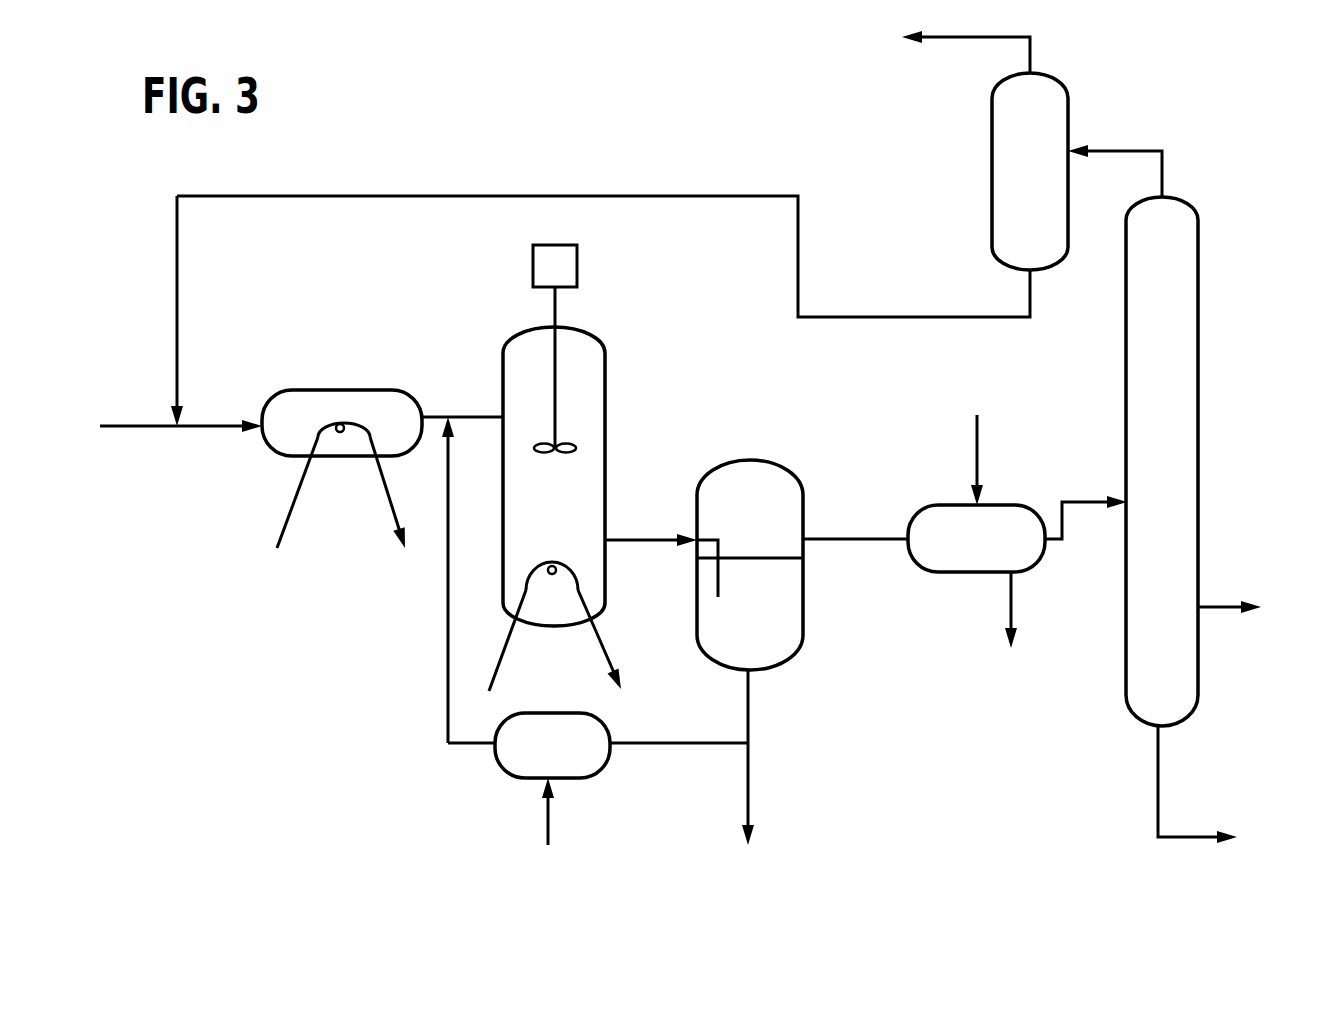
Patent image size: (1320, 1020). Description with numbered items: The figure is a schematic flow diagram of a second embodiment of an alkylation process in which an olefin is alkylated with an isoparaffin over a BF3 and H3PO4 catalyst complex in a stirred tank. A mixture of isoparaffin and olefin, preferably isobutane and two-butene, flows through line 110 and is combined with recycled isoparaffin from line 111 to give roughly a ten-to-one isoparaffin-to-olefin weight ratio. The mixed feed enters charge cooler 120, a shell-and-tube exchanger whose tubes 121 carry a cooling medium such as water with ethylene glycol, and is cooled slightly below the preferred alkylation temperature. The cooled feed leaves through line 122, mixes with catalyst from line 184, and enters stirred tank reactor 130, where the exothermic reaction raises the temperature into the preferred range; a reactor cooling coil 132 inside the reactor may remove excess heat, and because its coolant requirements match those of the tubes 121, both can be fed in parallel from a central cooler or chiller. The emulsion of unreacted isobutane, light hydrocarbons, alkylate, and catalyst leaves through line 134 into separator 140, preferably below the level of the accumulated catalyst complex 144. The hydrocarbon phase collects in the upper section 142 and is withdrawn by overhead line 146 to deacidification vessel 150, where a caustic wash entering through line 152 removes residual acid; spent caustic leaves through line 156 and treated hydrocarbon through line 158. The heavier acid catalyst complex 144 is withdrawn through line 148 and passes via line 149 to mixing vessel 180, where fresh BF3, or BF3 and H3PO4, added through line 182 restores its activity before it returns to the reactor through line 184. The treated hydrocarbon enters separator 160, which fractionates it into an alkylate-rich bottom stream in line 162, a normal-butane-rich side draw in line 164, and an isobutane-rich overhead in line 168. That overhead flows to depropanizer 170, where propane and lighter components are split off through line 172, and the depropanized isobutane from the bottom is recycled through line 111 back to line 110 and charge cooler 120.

The line 110 is at (133, 430).
The line 111 is at (177, 343).
The charge cooler 120 is at (312, 434).
The tubes 121 is at (290, 510).
The line 122 is at (440, 412).
The stirred tank reactor 130 is at (572, 512).
The reactor cooling coil 132 is at (502, 640).
The line 134 is at (618, 544).
The separator 140 is at (807, 523).
The upper section 142 is at (768, 537).
The accumulated catalyst complex 144 is at (766, 606).
The overhead line 146 is at (888, 543).
The line 148 is at (752, 697).
The line 149 is at (643, 745).
The deacidification vessel 150 is at (994, 548).
The line 152 is at (978, 456).
The line 156 is at (1008, 583).
The line 158 is at (1080, 507).
The separator 160 is at (1178, 430).
The line 162 is at (1159, 790).
The line 164 is at (1209, 603).
The line 168 is at (1117, 151).
The depropanizer 170 is at (1048, 170).
The line 172 is at (977, 38).
The mixing vessel 180 is at (564, 758).
The line 182 is at (548, 834).
The line 184 is at (445, 707).